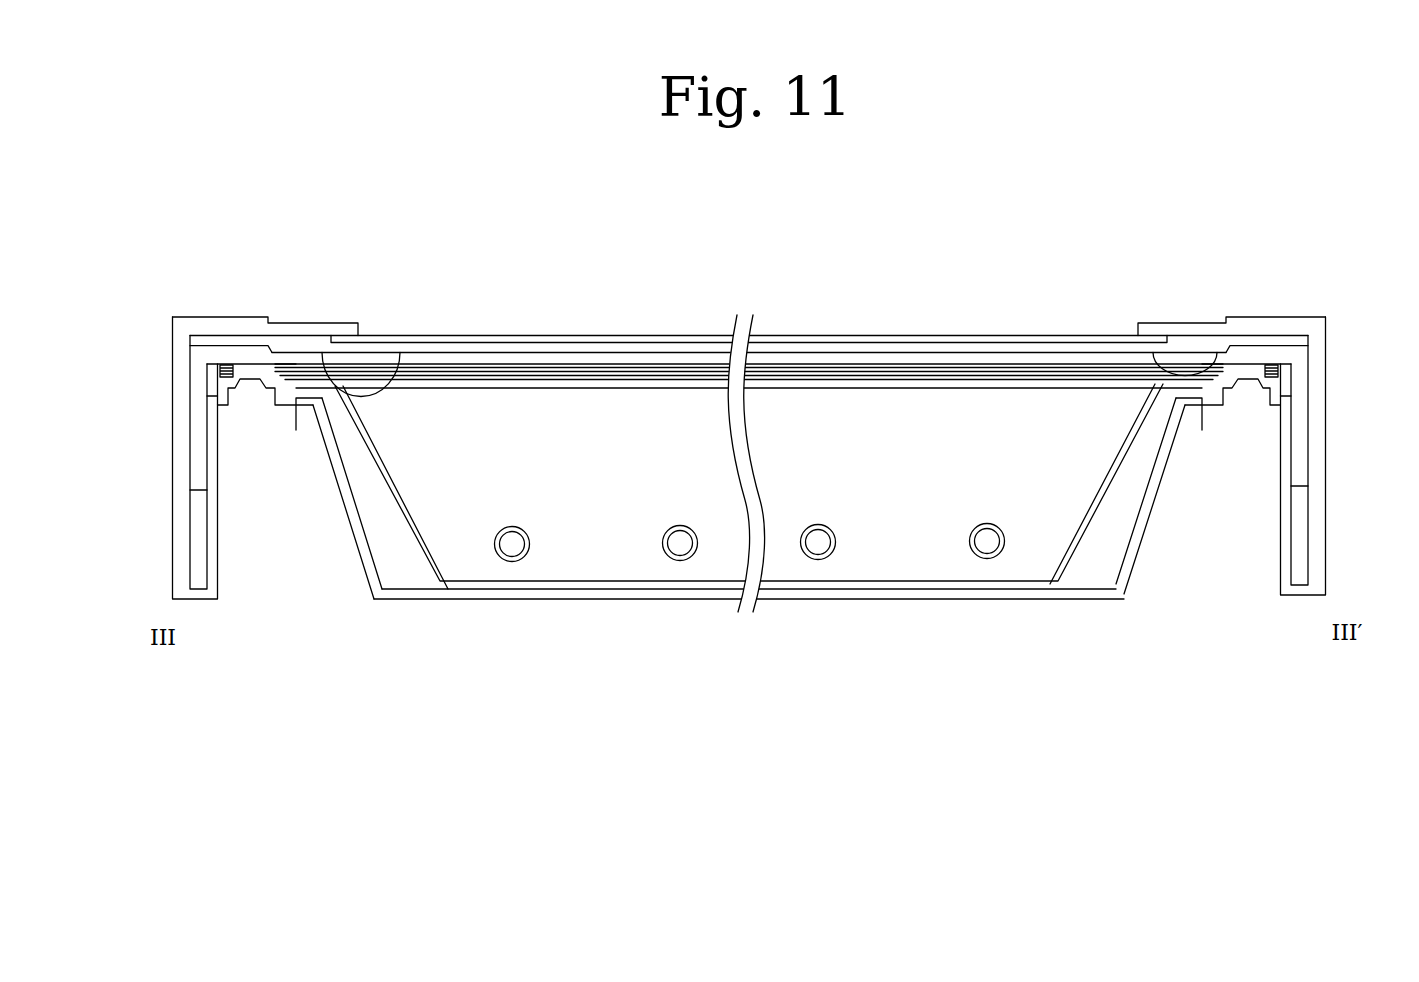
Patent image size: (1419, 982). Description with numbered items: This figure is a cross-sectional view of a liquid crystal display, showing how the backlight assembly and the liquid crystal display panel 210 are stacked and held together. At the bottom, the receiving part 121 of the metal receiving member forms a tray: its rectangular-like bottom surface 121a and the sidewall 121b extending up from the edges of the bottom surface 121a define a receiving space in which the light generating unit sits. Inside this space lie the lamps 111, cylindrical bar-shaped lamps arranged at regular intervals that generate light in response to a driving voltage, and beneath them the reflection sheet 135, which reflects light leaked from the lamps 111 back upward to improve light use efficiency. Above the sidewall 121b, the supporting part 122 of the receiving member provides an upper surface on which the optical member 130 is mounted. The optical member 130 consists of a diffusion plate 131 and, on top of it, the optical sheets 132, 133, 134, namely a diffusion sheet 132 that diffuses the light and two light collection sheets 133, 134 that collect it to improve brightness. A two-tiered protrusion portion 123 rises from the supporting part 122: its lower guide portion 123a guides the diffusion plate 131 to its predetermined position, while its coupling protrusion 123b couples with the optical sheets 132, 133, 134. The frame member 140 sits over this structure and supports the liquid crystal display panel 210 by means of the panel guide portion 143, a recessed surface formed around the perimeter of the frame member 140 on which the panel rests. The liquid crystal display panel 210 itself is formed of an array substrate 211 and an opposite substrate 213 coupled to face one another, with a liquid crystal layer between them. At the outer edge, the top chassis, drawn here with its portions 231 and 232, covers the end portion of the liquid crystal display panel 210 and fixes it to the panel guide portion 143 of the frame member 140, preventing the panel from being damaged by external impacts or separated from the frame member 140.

The lamp 111 is at (681, 562).
The receiving part 121 is at (749, 560).
The bottom surface 121a is at (1065, 591).
The sidewall 121b is at (1137, 548).
The supporting part 122 is at (297, 402).
The protrusion portion 123 is at (748, 402).
The guide portion 123a is at (322, 353).
The coupling protrusion 123b is at (254, 368).
The optical member 130 is at (749, 305).
The diffusion plate 131 is at (685, 262).
The diffusion sheet 132 is at (500, 373).
The light collection sheet 133 is at (570, 368).
The light collection sheet 134 is at (640, 363).
The reflection sheet 135 is at (572, 557).
The frame member 140 is at (198, 428).
The panel guide portion 143 is at (393, 352).
The liquid crystal display panel 210 is at (749, 287).
The array substrate 211 is at (935, 262).
The opposite substrate 213 is at (895, 338).
The top cover portion 231 is at (358, 266).
The side cover portion 232 is at (180, 368).